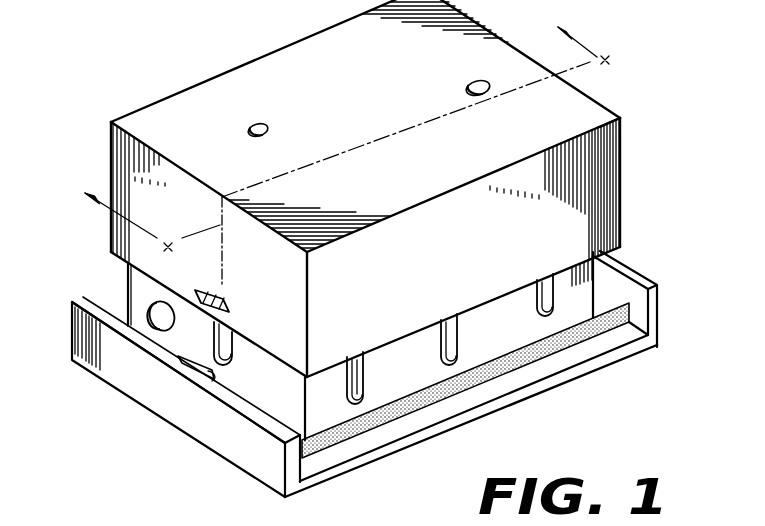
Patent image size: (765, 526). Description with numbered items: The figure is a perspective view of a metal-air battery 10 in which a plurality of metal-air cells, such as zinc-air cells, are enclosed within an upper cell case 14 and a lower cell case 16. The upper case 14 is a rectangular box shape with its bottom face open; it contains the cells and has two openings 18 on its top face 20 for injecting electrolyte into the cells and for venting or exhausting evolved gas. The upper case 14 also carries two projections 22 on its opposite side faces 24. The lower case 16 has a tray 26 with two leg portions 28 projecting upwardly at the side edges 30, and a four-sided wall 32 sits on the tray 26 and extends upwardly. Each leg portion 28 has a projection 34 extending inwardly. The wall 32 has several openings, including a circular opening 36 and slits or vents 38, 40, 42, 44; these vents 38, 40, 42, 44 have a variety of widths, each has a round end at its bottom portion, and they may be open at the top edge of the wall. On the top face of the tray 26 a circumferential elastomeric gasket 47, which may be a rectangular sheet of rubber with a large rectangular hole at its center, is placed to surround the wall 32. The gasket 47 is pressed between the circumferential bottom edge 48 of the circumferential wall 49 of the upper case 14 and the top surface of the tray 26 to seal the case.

The metal-air battery 10 is at (677, 56).
The upper cell case 14 is at (121, 118).
The lower cell case 16 is at (588, 378).
The openings 18 is at (250, 125).
The top face 20 is at (592, 112).
The projections 22 is at (200, 287).
The side faces 24 is at (130, 158).
The tray 26 is at (400, 448).
The leg portions 28 is at (170, 403).
The side edges 30 is at (216, 443).
The four-sided wall 32 is at (528, 383).
The projection 34 is at (214, 374).
The circular opening 36 is at (150, 315).
The vent 38 is at (236, 345).
The vent 40 is at (376, 349).
The vent 42 is at (462, 328).
The vent 44 is at (553, 285).
The circumferential elastomeric gasket 47 is at (457, 398).
The circumferential bottom edge 48 is at (396, 346).
The circumferential wall 49 is at (202, 206).